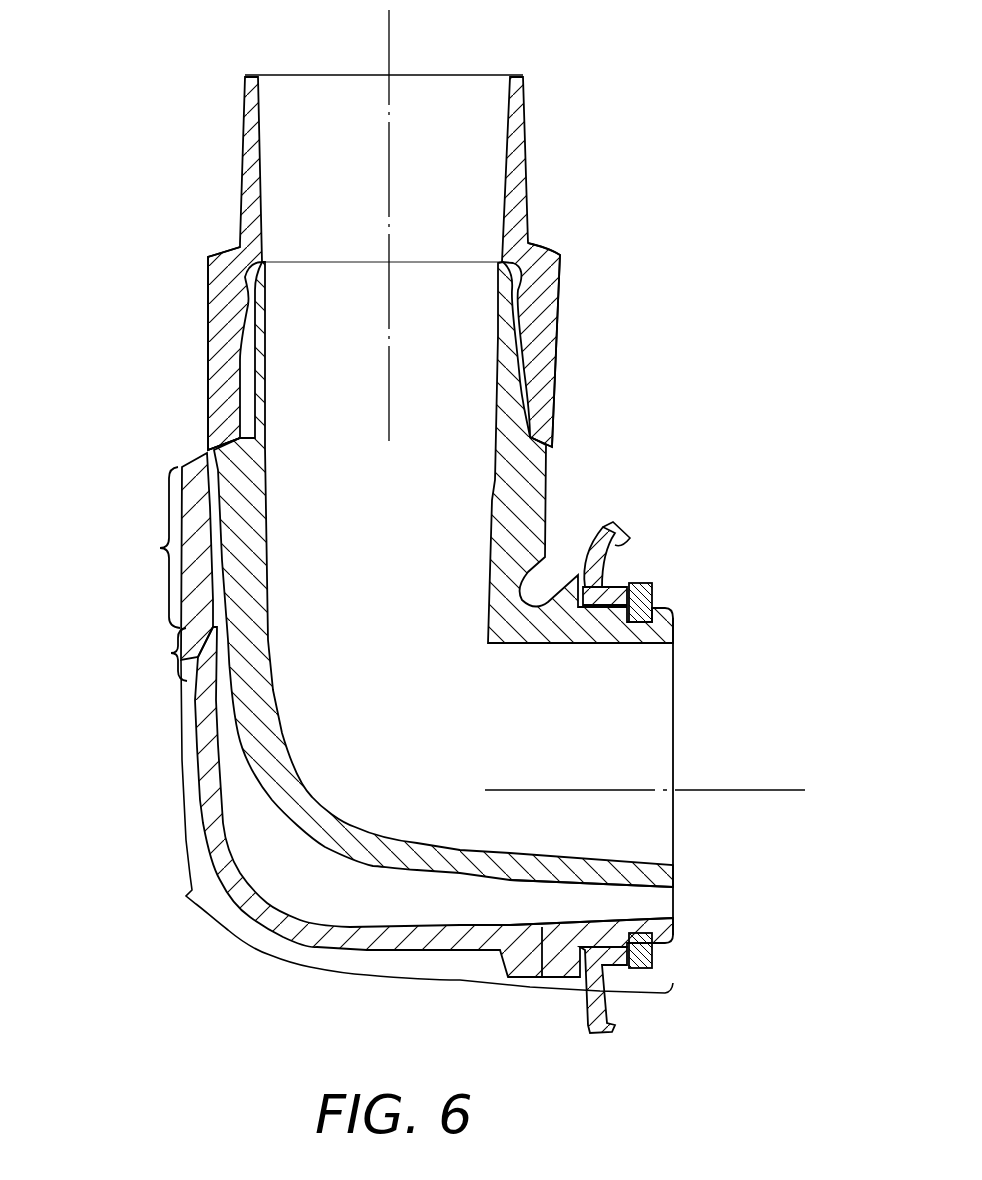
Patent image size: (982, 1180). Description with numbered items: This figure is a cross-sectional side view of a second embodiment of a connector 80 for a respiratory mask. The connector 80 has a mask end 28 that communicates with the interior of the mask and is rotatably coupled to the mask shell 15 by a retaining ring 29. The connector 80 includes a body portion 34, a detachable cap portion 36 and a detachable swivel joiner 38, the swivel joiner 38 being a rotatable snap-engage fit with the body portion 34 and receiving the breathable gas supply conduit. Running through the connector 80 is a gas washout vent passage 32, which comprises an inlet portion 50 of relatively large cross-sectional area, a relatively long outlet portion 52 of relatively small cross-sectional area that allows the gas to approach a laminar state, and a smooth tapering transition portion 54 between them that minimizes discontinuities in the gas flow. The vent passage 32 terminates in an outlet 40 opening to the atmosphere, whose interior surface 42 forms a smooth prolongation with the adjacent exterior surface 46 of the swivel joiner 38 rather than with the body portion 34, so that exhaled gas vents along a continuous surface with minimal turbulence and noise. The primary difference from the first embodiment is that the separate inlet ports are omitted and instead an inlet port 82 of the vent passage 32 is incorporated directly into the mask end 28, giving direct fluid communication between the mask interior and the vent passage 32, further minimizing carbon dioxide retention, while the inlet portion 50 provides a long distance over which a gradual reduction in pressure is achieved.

The connector 80 is at (618, 164).
The exterior surface of the swivel joiner 46 is at (207, 352).
The swivel joiner 38 is at (552, 295).
The outlet 40 is at (205, 432).
The body portion 34 is at (527, 500).
The gas washout vent passage 32 is at (255, 821).
The mask end 28 is at (705, 708).
The inlet port 82 is at (653, 902).
The retaining ring 29 is at (652, 592).
The mask shell 15 is at (632, 540).
The interior surface 42 is at (215, 510).
The outlet portion 52 is at (146, 547).
The transition portion 54 is at (151, 654).
The cap portion 36 is at (290, 932).
The inlet portion 50 is at (403, 826).